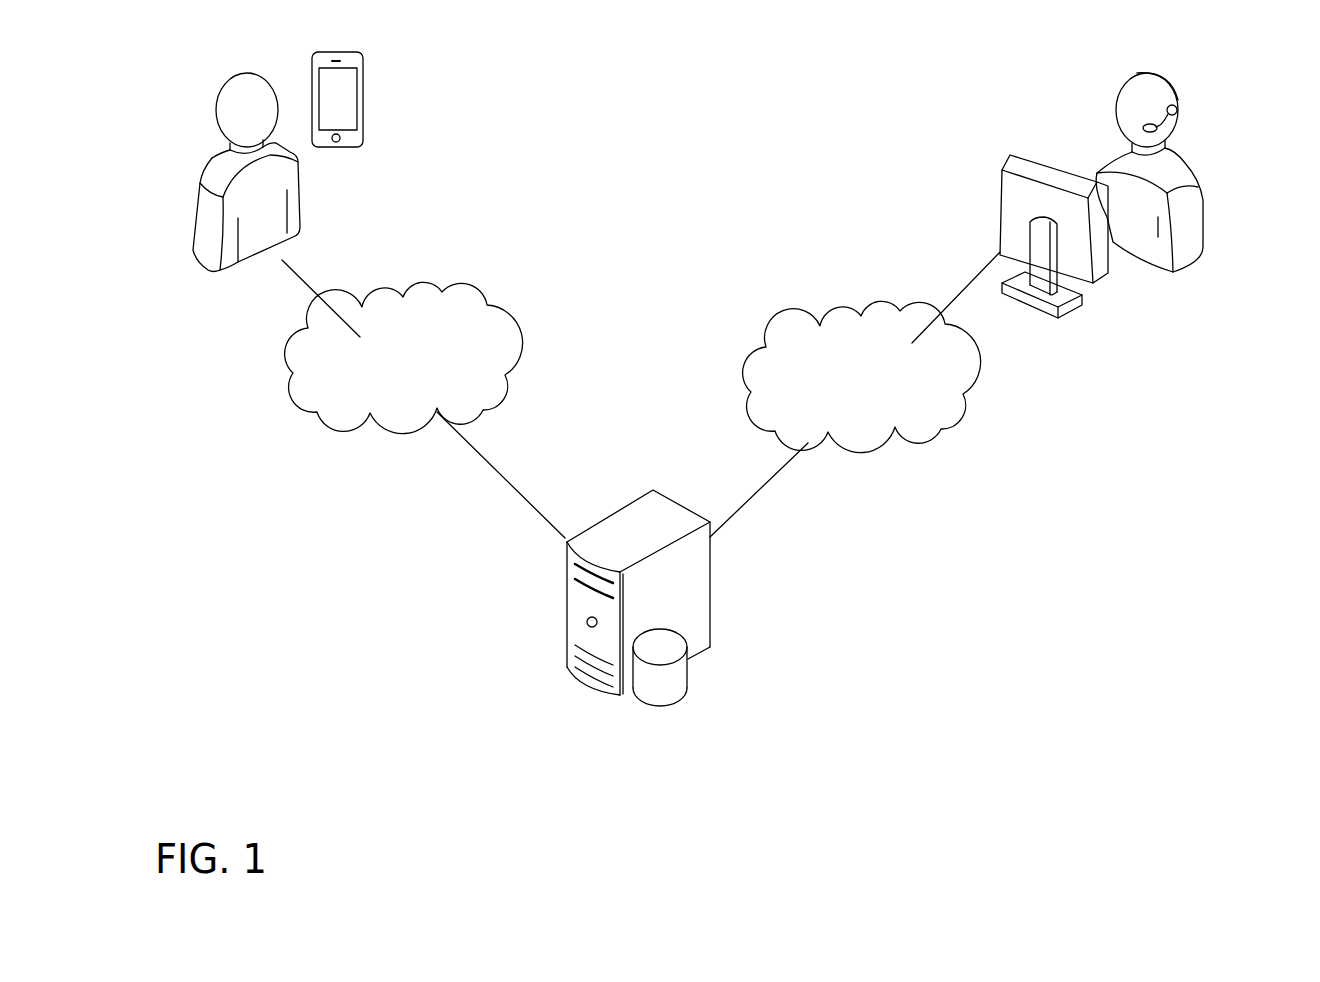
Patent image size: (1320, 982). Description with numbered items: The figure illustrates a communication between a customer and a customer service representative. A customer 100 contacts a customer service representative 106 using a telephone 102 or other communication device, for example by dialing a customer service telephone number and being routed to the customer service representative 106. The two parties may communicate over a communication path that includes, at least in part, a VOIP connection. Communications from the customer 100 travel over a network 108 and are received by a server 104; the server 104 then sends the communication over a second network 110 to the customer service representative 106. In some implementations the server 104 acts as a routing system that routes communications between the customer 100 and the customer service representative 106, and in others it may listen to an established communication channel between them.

The customer 100 is at (208, 165).
The telephone 102 is at (363, 102).
The server 104 is at (635, 495).
The customer service representative 106 is at (1202, 200).
The network 108 is at (492, 307).
The network 110 is at (830, 310).